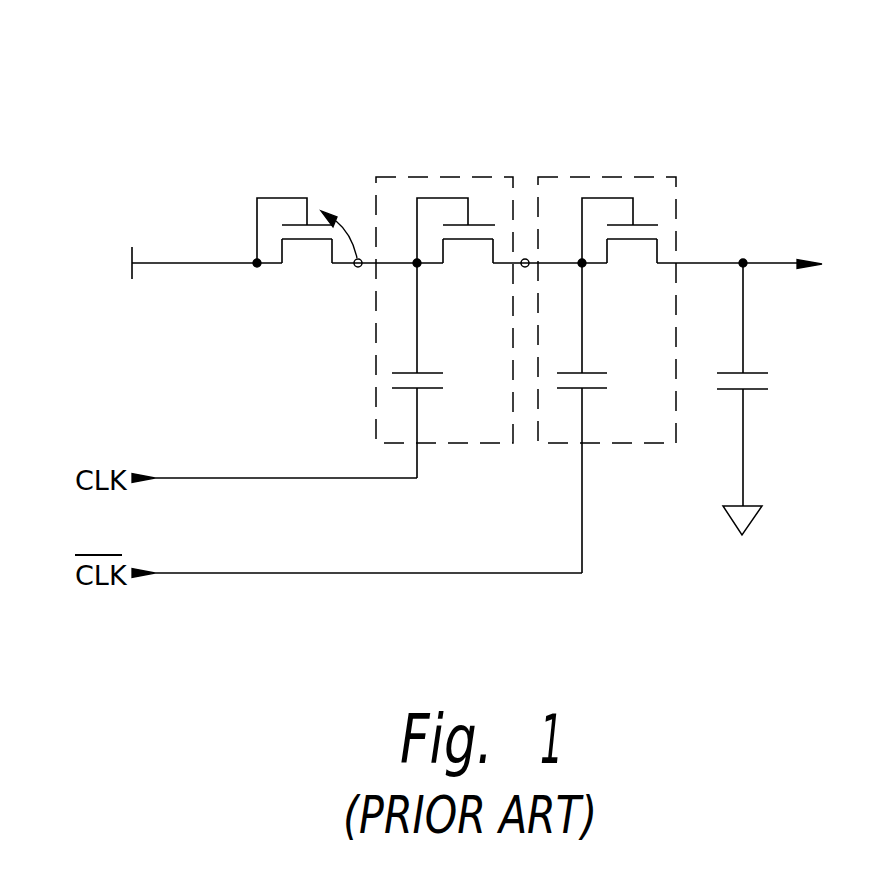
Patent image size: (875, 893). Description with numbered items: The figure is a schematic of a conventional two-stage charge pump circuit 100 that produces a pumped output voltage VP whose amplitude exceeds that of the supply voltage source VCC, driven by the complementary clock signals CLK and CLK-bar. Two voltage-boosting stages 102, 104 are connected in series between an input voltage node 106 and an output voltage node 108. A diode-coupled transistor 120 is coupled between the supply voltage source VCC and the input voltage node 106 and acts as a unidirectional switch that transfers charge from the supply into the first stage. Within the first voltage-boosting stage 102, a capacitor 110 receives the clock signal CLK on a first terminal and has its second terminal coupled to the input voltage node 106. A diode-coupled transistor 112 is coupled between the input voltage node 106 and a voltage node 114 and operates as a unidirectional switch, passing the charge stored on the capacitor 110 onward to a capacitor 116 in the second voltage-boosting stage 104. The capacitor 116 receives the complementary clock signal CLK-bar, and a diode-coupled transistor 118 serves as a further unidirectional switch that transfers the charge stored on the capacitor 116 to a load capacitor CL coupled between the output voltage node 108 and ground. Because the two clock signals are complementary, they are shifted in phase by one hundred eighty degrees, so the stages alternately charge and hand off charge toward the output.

The charge pump circuit 100 is at (217, 90).
The voltage-boosting stage 102 is at (433, 171).
The voltage-boosting stage 104 is at (621, 171).
The input voltage node 106 is at (358, 268).
The output voltage node 108 is at (744, 259).
The capacitor 110 is at (433, 371).
The diode-coupled transistor 112 is at (491, 258).
The voltage node 114 is at (526, 258).
The capacitor 116 is at (598, 371).
The diode-coupled transistor 118 is at (655, 258).
The diode-coupled transistor 120 is at (302, 160).